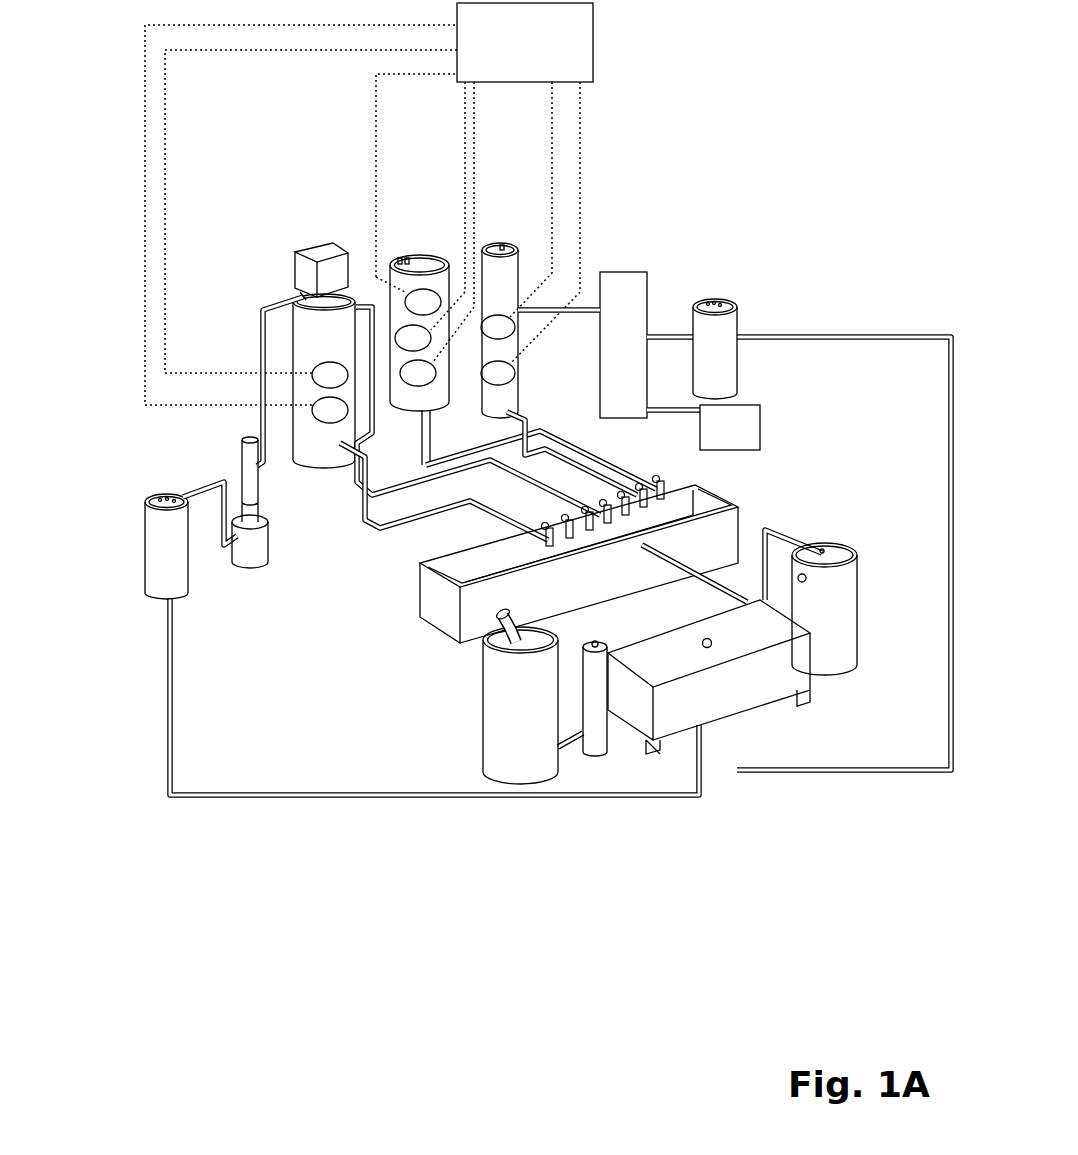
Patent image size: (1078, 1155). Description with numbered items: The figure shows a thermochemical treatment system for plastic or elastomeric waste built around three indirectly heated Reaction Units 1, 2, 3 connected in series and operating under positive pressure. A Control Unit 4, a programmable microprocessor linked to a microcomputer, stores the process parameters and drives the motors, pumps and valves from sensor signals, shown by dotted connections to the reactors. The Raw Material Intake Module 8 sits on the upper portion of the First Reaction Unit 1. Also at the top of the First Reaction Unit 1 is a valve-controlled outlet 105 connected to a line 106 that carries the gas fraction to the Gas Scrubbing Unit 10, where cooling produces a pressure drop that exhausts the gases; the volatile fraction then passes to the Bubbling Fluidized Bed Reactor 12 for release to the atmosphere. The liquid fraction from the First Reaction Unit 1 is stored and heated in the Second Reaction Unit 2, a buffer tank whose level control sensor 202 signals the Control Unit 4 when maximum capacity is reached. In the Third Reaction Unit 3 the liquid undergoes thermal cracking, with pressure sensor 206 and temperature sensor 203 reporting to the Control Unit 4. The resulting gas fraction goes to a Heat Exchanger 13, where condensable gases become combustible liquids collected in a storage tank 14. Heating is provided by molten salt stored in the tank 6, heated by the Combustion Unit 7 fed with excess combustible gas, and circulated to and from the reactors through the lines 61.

The First Reaction Unit 1 is at (353, 300).
The Second Reaction Unit 2 is at (435, 262).
The Third Reaction Unit 3 is at (517, 249).
The Control Unit 4 is at (369, 204).
The tank 6 is at (722, 493).
The Combustion Unit 7 is at (720, 713).
The Raw Material Intake Module 8 is at (311, 243).
The Gas Scrubbing Unit 10 is at (242, 446).
The Bubbling Fluidized Bed Reactor 12 is at (737, 313).
The Heat Exchanger 13 is at (623, 272).
The storage tank 14 is at (730, 427).
The inlet and outlet lines of molten salt 61 is at (372, 520).
The valve-controlled outlet 105 is at (302, 296).
The line 106 is at (260, 338).
The level control sensor 202 is at (418, 373).
The temperature sensor 203 is at (413, 374).
The pressure sensor 206 is at (413, 338).